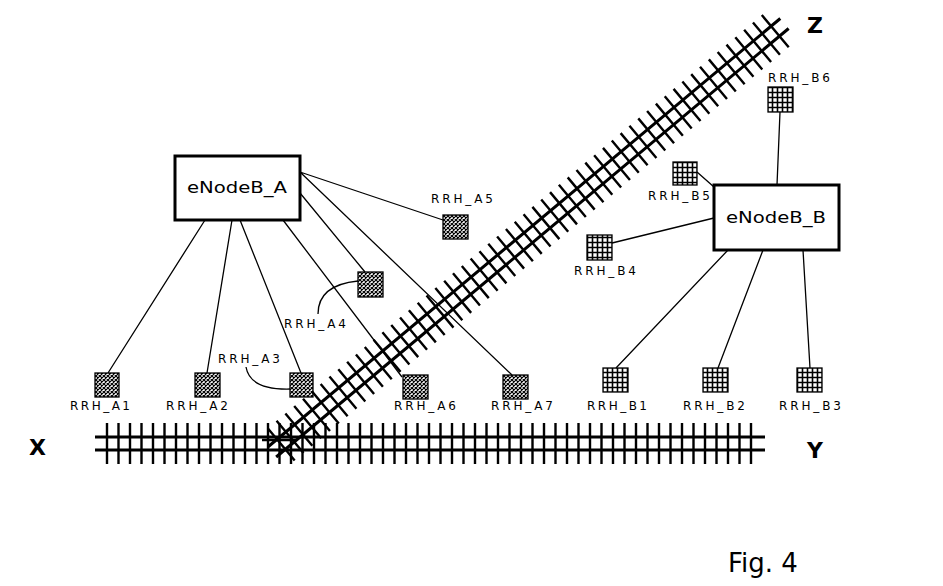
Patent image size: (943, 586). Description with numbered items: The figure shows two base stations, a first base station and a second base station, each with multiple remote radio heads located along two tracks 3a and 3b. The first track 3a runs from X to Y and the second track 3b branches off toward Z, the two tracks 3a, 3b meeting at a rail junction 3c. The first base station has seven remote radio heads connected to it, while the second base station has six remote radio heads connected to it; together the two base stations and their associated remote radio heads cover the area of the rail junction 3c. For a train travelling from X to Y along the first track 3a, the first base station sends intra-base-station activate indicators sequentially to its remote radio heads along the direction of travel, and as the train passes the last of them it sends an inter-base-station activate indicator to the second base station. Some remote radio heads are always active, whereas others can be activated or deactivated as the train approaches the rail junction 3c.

The track 3a is at (146, 474).
The track 3b is at (552, 120).
The rail junction 3c is at (266, 468).